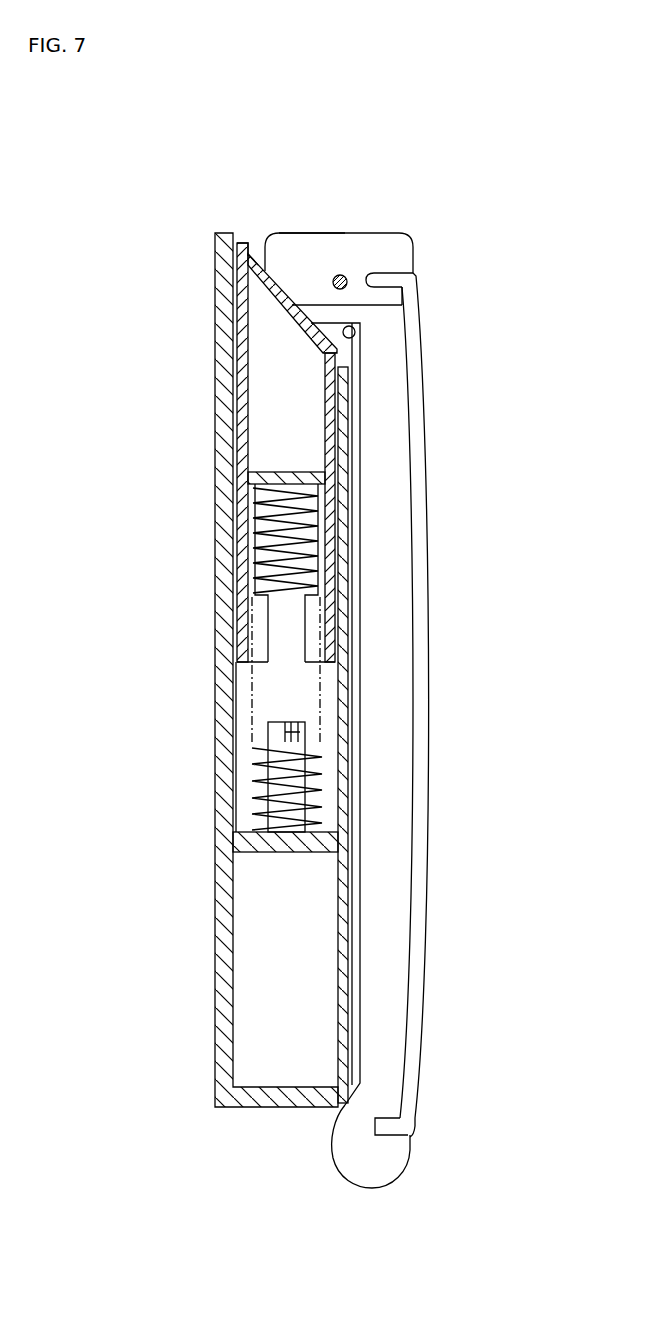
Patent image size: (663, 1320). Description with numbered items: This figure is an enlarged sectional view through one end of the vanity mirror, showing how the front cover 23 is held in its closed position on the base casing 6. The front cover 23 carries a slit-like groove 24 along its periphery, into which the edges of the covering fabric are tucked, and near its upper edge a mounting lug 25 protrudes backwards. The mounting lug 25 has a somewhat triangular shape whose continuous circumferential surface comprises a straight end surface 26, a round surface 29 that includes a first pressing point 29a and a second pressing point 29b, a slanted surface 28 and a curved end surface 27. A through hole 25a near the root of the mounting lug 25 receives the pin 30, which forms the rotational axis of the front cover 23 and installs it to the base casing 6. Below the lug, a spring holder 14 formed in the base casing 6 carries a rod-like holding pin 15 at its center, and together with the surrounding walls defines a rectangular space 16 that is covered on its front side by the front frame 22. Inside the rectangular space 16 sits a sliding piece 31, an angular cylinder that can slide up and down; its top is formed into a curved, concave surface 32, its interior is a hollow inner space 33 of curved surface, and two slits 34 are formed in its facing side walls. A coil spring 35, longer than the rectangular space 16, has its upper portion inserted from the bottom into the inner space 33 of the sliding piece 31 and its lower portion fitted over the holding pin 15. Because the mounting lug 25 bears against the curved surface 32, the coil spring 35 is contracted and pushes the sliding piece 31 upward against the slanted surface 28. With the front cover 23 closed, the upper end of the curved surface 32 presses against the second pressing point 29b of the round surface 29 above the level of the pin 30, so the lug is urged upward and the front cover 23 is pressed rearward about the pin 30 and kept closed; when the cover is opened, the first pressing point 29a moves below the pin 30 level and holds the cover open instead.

The base casing 6 is at (232, 912).
The spring holder 14 is at (285, 847).
The holding pin 15 is at (252, 787).
The rectangular space 16 is at (245, 690).
The front frame 22 is at (356, 972).
The front cover 23 is at (429, 889).
The slit-like groove 24 is at (408, 1127).
The mounting lug 25 is at (310, 238).
The through hole 25a is at (342, 276).
The straight end surface 26 is at (293, 233).
The curved end surface 27 is at (356, 333).
The slanted surface 28 is at (313, 311).
The round surface 29 is at (240, 243).
The first pressing point 29a is at (264, 240).
The second pressing point 29b is at (250, 258).
The pin 30 is at (336, 276).
The sliding piece 31 is at (230, 403).
The curved surface 32 is at (320, 309).
The hollow inner space 33 is at (288, 622).
The slit 34 is at (298, 600).
The coil spring 35 is at (270, 777).